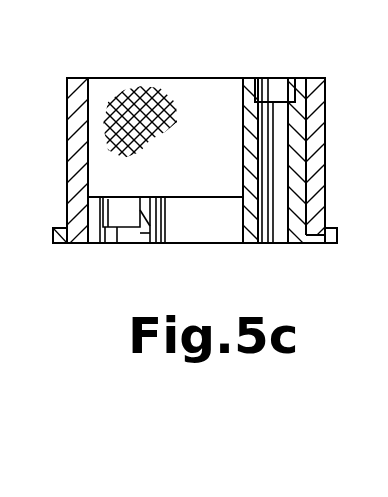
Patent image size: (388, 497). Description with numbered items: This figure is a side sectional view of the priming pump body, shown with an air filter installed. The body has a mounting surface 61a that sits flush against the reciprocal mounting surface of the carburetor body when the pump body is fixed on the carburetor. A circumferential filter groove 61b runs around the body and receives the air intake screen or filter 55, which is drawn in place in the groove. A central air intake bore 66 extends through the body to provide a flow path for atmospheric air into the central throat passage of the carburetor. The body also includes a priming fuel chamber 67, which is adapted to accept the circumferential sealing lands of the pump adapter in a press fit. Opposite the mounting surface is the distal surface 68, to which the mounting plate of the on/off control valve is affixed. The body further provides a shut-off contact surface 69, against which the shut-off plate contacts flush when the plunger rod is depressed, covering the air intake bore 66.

The air intake screen or filter 55 is at (322, 113).
The mounting surface 61a is at (292, 236).
The circumferential filter groove 61b is at (73, 232).
The central air intake bore 66 is at (216, 232).
The priming fuel chamber 67 is at (268, 234).
The distal surface 68 is at (278, 78).
The shut-off contact surface 69 is at (177, 195).